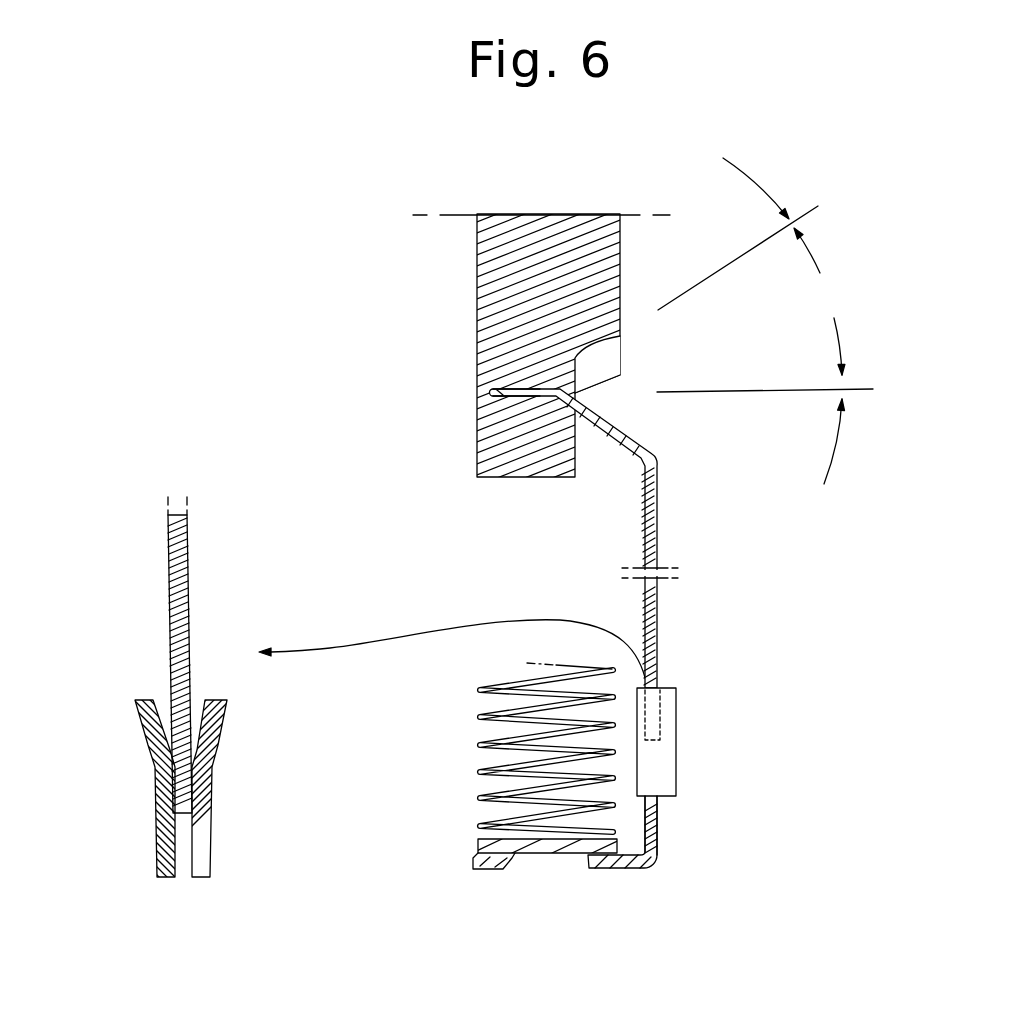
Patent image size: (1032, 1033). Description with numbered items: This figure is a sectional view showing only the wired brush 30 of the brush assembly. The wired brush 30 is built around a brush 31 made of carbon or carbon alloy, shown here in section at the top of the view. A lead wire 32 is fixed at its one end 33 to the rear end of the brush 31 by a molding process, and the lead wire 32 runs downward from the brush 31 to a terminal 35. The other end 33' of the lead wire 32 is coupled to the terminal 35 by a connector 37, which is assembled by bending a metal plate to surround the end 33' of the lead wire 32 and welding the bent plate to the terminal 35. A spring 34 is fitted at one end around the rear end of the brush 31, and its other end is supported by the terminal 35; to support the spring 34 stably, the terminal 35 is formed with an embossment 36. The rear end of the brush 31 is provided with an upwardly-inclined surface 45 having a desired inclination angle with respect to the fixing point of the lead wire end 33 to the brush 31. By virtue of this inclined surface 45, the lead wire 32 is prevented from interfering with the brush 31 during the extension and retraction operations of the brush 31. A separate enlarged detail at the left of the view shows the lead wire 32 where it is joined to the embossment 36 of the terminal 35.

The wired brush 30 is at (927, 211).
The brush 31 is at (488, 272).
The lead wire 32 is at (657, 540).
The one end of lead wire 33 is at (466, 411).
The other end of lead wire 33' is at (722, 709).
The spring 34 is at (478, 744).
The terminal 35 is at (660, 829).
The embossment 36 is at (542, 850).
The connector 37 is at (664, 756).
The upwardly-inclined surface 45 is at (589, 342).